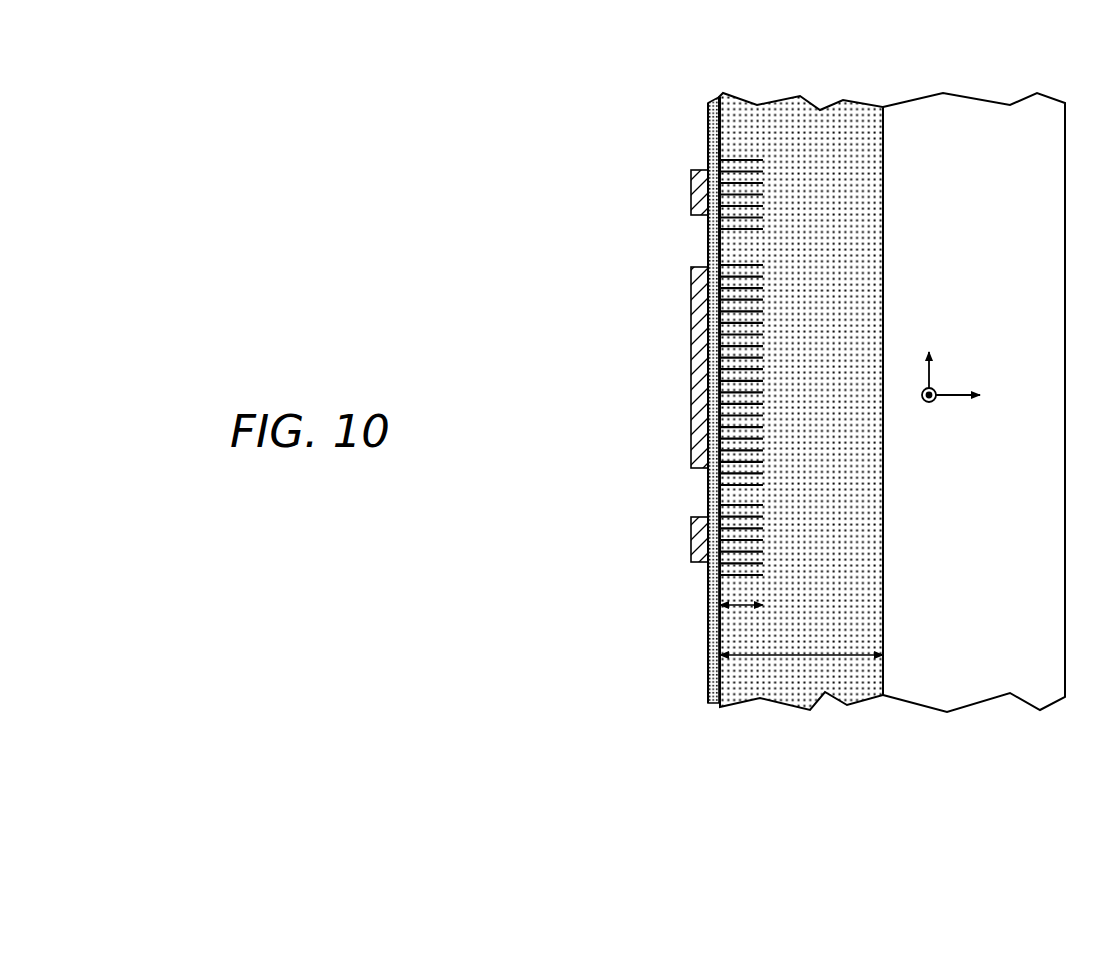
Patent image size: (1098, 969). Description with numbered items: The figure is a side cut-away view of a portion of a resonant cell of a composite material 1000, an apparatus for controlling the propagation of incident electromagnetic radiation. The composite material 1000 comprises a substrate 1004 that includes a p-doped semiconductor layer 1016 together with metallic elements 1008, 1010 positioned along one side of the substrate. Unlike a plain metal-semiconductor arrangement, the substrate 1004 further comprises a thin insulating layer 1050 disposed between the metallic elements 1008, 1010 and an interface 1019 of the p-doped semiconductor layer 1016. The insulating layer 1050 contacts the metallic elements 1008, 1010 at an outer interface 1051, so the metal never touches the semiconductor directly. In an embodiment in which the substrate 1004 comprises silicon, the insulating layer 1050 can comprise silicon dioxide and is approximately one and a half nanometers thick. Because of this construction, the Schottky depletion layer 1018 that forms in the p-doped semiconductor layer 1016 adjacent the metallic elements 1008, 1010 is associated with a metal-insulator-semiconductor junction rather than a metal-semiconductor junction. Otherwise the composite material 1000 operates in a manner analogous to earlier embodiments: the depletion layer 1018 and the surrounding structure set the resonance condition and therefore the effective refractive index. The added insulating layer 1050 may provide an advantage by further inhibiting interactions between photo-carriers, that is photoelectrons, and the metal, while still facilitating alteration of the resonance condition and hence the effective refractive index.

The composite material 1000 is at (540, 294).
The substrate 1004 is at (1065, 768).
The metallic element 1008 is at (691, 420).
The metallic element 1010 is at (691, 197).
The p-doped semiconductor layer 1016 is at (887, 720).
The Schottky depletion layer 1018 is at (762, 152).
The interface 1019 is at (722, 107).
The insulating layer 1050 is at (713, 705).
The outer interface 1051 is at (707, 135).